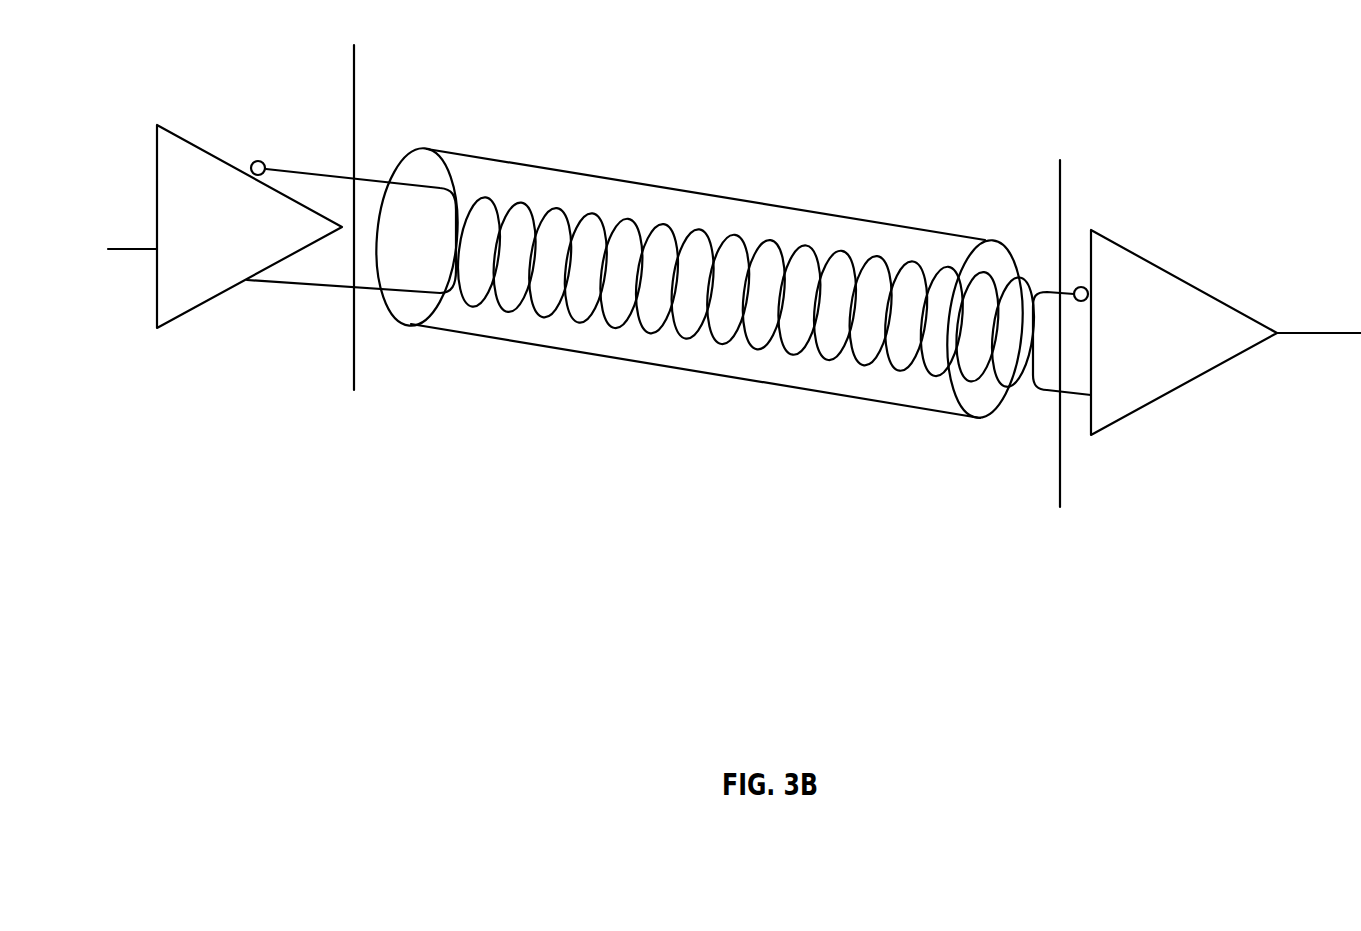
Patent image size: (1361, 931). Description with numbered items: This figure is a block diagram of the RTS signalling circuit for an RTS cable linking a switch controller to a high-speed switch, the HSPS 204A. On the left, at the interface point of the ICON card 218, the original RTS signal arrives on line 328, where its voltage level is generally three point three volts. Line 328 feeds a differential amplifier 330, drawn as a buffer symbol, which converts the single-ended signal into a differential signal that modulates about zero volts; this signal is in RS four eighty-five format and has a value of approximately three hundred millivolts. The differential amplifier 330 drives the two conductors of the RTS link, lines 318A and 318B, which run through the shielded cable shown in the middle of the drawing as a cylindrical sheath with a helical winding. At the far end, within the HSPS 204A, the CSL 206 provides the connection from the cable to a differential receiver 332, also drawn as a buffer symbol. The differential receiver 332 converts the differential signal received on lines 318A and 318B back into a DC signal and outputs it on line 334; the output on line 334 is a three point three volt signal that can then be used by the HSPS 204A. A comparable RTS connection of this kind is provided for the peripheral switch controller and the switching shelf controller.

The ICON card 218 is at (226, 216).
The HSPS 204A is at (1210, 333).
The CSL 206 is at (877, 222).
The line 318A is at (640, 327).
The line 318B is at (667, 222).
The line 328 is at (122, 249).
The differential amplifier 330 is at (215, 282).
The differential receiver 332 is at (1172, 392).
The line 334 is at (1315, 335).